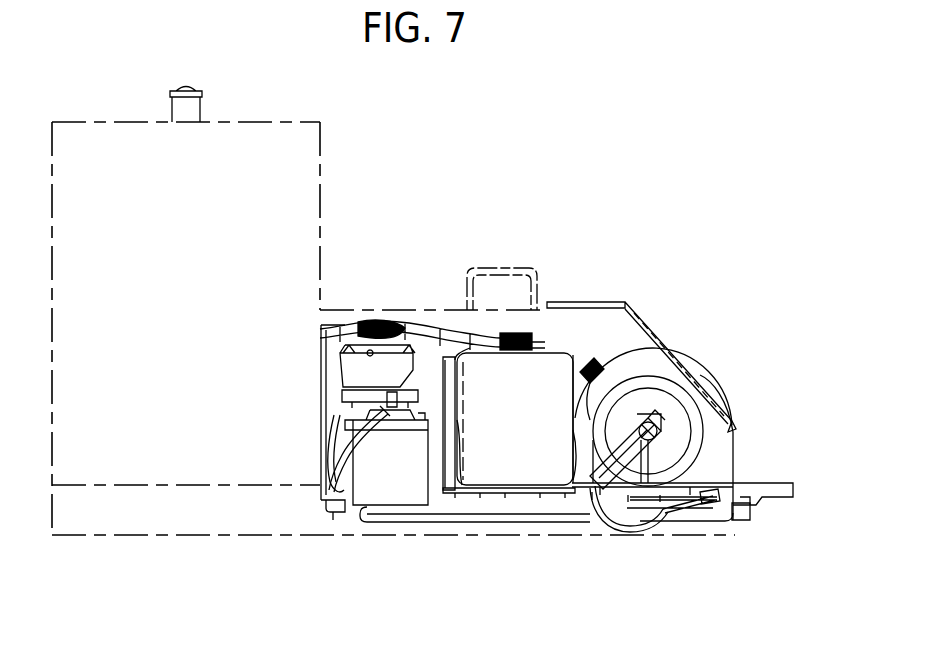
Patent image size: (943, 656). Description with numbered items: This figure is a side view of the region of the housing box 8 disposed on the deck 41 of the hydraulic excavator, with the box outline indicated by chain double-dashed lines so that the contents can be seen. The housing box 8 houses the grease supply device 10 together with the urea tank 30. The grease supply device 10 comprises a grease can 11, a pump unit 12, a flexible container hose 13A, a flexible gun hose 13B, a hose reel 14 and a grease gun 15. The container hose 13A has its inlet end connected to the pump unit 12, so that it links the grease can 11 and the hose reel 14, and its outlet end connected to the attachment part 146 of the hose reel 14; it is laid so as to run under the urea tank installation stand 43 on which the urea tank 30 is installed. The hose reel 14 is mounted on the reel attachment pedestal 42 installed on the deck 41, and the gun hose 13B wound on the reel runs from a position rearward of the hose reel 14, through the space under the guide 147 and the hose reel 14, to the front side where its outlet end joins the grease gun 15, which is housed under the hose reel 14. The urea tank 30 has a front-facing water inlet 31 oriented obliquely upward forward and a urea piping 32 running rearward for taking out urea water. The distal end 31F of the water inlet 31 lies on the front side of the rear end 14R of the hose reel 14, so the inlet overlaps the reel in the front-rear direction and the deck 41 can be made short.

The housing box 8 is at (735, 462).
The grease supply device 10 is at (333, 520).
The grease can 11 is at (386, 470).
The pump unit 12 is at (377, 367).
The container hose 13A is at (430, 520).
The gun hose 13B is at (660, 516).
The hose reel 14 is at (712, 388).
The rear end of the hose reel 14R is at (668, 413).
The grease gun 15 is at (715, 512).
The urea tank 30 is at (552, 365).
The water inlet 31 is at (598, 320).
The distal end of the water inlet 31F is at (612, 362).
The urea piping 32 is at (456, 335).
The deck 41 is at (710, 537).
The reel attachment pedestal 42 is at (661, 510).
The urea tank installation stand 43 is at (508, 500).
The attachment part 146 is at (716, 415).
The guide 147 is at (601, 500).